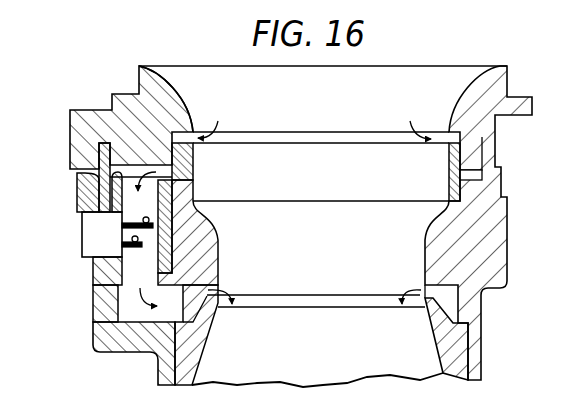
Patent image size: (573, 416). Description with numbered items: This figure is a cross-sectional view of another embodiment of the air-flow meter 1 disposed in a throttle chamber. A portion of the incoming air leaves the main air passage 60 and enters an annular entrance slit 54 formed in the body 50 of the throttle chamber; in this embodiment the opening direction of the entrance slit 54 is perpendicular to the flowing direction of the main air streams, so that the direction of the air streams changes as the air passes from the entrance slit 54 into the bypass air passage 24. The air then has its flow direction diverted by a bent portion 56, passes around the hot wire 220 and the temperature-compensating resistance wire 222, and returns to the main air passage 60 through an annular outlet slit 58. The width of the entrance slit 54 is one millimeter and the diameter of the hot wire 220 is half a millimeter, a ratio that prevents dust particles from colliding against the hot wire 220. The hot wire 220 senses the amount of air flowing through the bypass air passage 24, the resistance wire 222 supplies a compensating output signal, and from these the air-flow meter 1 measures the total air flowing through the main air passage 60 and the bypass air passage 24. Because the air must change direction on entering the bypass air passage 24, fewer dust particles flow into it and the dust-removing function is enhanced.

The air-flow meter 1 is at (93, 230).
The bypass air passage 24 is at (131, 203).
The body of the throttle chamber 50 is at (480, 255).
The annular inlet slit 54 is at (182, 130).
The bent portion 56 is at (178, 166).
The annular outlet slit 58 is at (223, 286).
The main air passage 60 is at (413, 342).
The hot wire 220 is at (149, 219).
The temperature-compensating resistance wire 222 is at (138, 240).